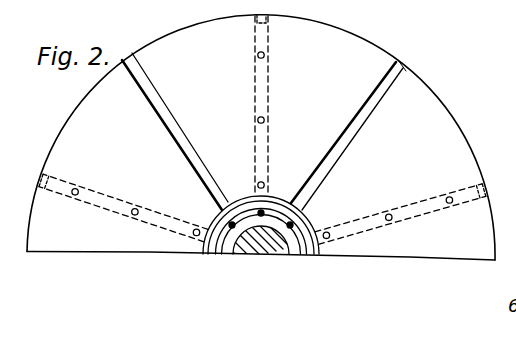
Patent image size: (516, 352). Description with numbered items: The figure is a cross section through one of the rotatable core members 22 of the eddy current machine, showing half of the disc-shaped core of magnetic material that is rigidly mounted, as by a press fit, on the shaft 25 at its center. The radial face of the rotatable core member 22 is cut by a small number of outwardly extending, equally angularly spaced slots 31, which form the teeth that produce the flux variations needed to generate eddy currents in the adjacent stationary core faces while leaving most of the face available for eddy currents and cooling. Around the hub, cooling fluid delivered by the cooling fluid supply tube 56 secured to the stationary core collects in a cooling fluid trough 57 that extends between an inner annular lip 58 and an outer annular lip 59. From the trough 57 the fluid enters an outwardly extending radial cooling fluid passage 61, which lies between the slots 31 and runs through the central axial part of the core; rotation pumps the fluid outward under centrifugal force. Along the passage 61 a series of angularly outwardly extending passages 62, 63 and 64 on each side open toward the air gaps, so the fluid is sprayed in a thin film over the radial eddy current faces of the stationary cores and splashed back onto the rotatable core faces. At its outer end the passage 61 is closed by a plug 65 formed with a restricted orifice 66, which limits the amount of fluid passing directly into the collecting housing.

The rotatable core member 22 is at (191, 29).
The shaft 25 is at (280, 247).
The slot 31 is at (141, 78).
The cooling fluid supply tube 56 is at (259, 211).
The cooling fluid trough 57 is at (301, 251).
The inner annular lip 58 is at (229, 251).
The outer annular lip 59 is at (204, 251).
The radial cooling fluid passage 61 is at (57, 177).
The angularly outwardly extending passage 62 is at (196, 228).
The angularly outwardly extending passage 63 is at (134, 215).
The angularly outwardly extending passage 64 is at (75, 195).
The plug 65 is at (270, 17).
The restricted orifice 66 is at (484, 186).